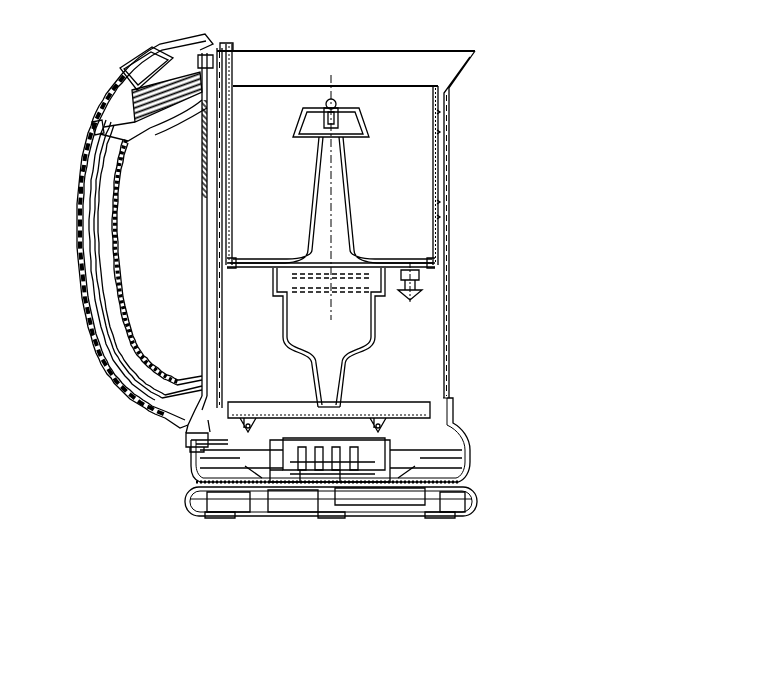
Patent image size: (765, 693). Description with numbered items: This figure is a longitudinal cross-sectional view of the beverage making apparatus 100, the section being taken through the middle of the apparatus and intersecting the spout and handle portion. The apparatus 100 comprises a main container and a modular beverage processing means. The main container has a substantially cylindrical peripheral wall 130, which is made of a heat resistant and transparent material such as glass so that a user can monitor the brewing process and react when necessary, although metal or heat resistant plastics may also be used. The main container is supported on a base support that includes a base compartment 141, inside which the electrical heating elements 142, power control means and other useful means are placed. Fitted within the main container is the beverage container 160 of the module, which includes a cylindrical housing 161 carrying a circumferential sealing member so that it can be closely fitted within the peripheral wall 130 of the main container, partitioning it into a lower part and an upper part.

The beverage making apparatus 100 is at (500, 193).
The peripheral wall 130 is at (450, 148).
The base compartment 141 is at (452, 441).
The electrical heating elements 142 is at (272, 428).
The beverage container 160 is at (403, 82).
The cylindrical housing 161 is at (427, 146).